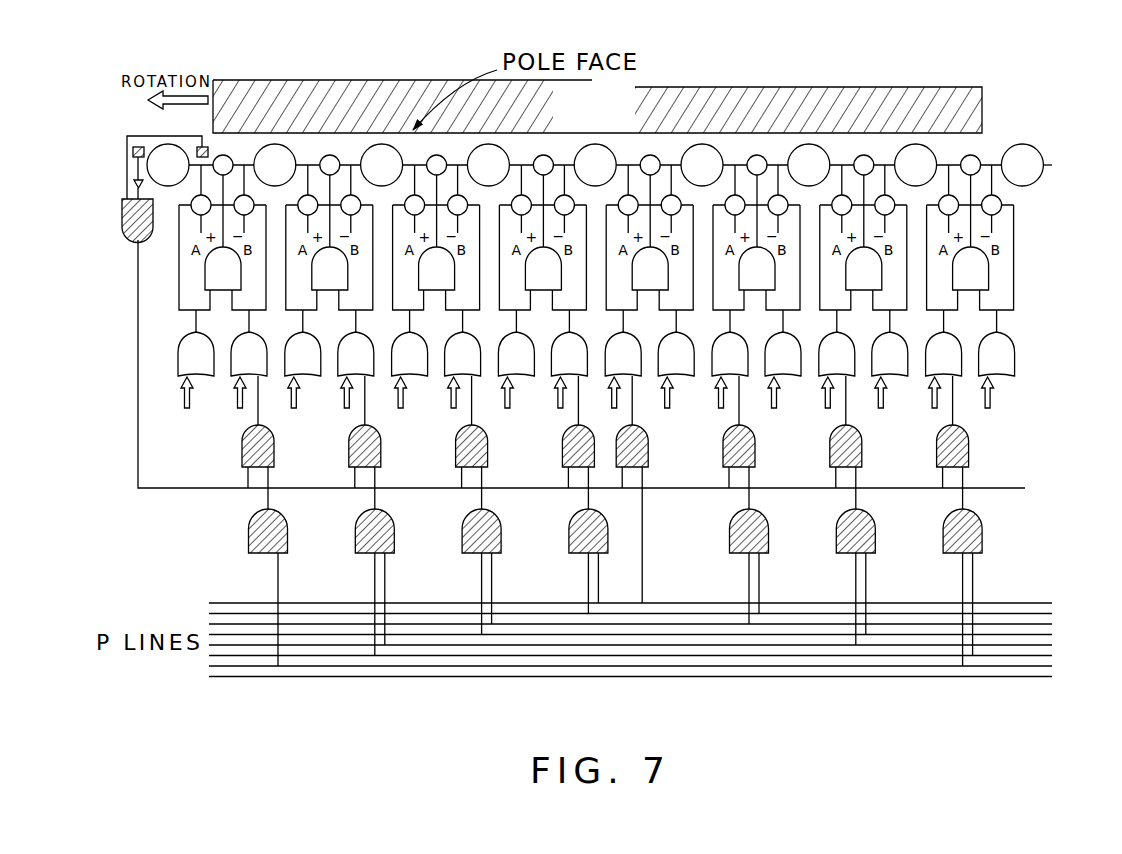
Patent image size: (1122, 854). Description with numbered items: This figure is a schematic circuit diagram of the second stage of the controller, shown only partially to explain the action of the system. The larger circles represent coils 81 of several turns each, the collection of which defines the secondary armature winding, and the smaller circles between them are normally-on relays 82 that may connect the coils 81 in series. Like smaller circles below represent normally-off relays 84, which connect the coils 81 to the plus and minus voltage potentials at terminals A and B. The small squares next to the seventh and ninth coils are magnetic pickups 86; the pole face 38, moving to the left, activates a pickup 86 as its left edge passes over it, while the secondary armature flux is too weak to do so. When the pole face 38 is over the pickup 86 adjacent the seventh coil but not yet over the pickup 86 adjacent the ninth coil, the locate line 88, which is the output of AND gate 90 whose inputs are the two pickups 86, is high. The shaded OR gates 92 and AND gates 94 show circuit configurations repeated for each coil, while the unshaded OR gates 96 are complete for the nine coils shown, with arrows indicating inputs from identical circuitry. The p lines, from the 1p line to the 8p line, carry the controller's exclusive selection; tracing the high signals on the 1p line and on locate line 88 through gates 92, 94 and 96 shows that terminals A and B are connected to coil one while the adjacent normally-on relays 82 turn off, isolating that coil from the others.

The pole face 38 is at (620, 121).
The coils 81 is at (1040, 183).
The normally-on relays 82 is at (981, 156).
The normally-off relays 84 is at (999, 214).
The magnetic pickups 86 is at (146, 144).
The locate line 88 is at (1030, 488).
The AND gate 90 is at (122, 232).
The OR gates 92 is at (983, 532).
The AND gates 94 is at (971, 446).
The OR gates 96 is at (991, 270).
The 1p line 1p is at (209, 603).
The 8p line 8p is at (209, 677).